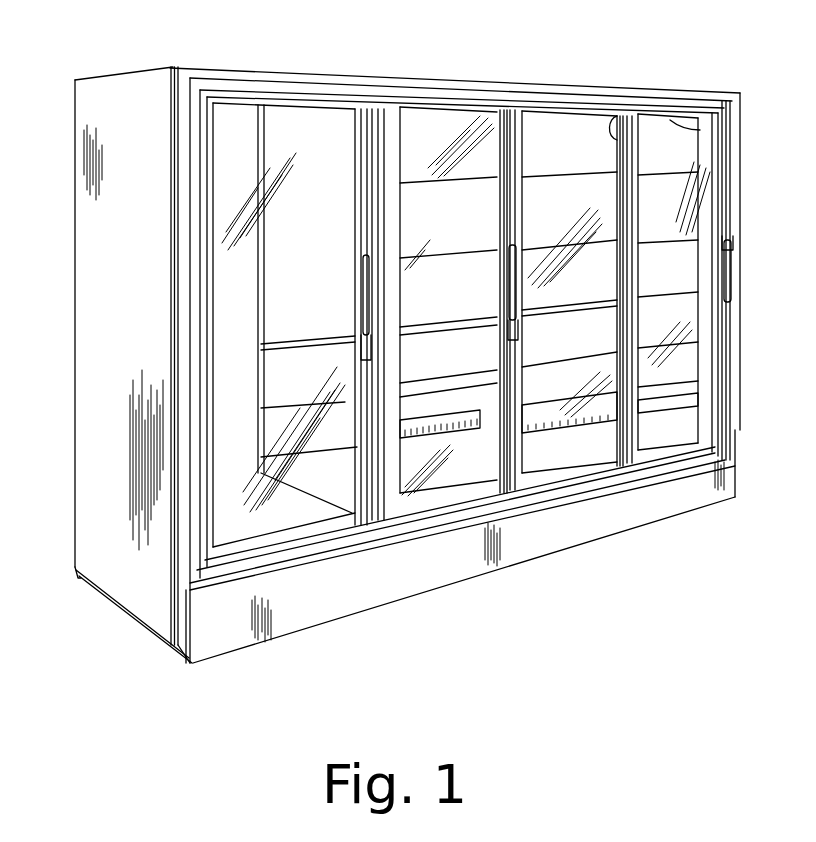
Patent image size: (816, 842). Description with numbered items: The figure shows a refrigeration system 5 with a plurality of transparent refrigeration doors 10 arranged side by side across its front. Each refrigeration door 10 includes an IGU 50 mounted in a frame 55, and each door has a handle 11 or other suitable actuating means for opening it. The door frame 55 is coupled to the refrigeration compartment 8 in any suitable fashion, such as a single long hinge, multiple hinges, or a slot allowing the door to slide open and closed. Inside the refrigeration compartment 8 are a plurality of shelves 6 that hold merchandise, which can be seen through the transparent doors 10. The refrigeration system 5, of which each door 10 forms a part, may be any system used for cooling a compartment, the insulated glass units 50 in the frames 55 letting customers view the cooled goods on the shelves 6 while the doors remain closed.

The refrigeration system 5 is at (393, 354).
The shelves 6 is at (741, 276).
The refrigeration compartment 8 is at (100, 365).
The refrigeration door 10 is at (233, 396).
The handle 11 is at (750, 269).
The IGU 50 is at (398, 296).
The frame 55 is at (713, 108).